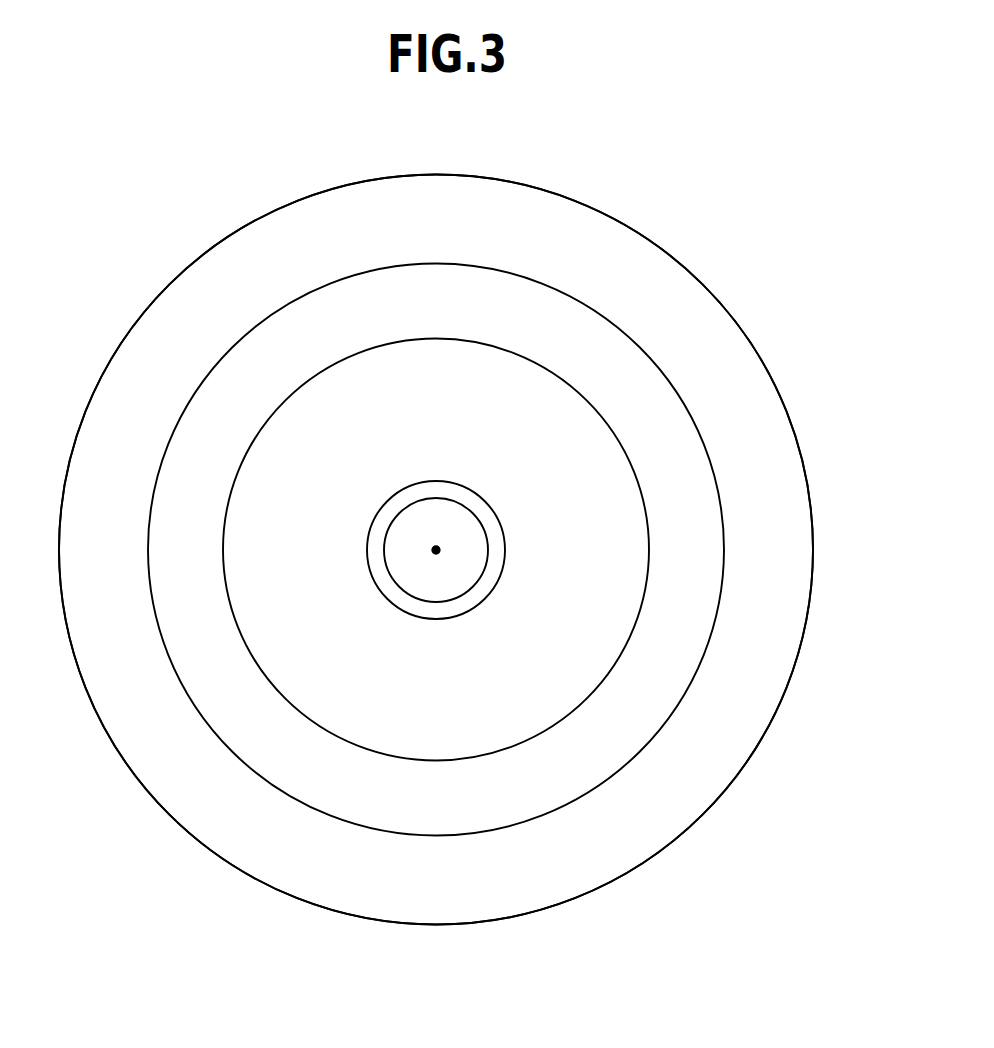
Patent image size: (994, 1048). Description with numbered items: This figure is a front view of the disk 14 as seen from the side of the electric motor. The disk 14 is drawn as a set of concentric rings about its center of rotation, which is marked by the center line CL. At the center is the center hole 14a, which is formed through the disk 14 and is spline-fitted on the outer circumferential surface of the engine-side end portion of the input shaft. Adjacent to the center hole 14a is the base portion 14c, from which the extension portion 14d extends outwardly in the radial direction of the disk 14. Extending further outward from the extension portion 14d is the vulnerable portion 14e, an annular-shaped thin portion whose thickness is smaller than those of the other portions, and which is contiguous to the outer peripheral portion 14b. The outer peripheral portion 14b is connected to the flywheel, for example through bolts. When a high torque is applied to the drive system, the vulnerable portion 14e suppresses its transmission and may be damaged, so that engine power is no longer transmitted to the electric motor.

The disk 14 is at (572, 145).
The center hole 14a is at (408, 593).
The outer peripheral portion 14b is at (458, 877).
The base portion 14c is at (385, 583).
The extension portion 14d is at (353, 680).
The vulnerable portion 14e is at (402, 803).
The center line CL is at (436, 548).